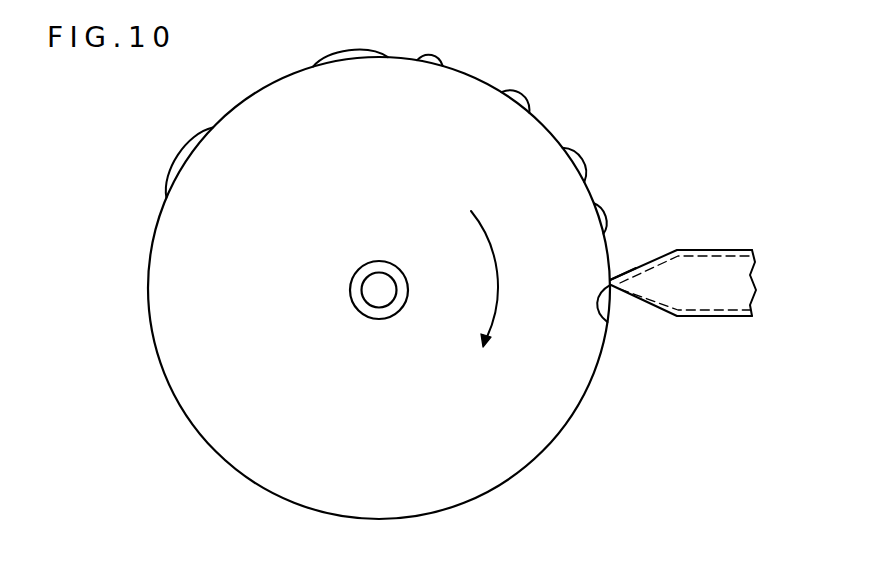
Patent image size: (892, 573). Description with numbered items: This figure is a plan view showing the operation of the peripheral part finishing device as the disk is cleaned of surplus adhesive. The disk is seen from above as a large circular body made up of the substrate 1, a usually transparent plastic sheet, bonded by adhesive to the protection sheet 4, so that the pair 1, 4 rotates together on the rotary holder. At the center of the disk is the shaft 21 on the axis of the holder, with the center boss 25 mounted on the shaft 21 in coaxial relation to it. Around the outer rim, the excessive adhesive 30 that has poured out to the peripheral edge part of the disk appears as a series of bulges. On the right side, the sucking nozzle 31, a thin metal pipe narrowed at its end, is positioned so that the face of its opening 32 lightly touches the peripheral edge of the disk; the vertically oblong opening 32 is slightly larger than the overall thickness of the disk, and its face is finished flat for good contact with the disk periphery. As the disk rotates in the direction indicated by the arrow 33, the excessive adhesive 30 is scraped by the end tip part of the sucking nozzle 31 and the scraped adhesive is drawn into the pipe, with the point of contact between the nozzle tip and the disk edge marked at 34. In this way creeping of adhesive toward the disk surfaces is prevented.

The substrate 1 is at (379, 288).
The protection sheet 4 is at (537, 141).
The shaft 21 is at (384, 281).
The center boss 25 is at (361, 275).
The excessive adhesive 30 is at (588, 157).
The sucking nozzle 31 is at (697, 262).
The opening 32 is at (610, 323).
The arrow 33 is at (496, 257).
The contact point of blade edge 34 is at (610, 280).